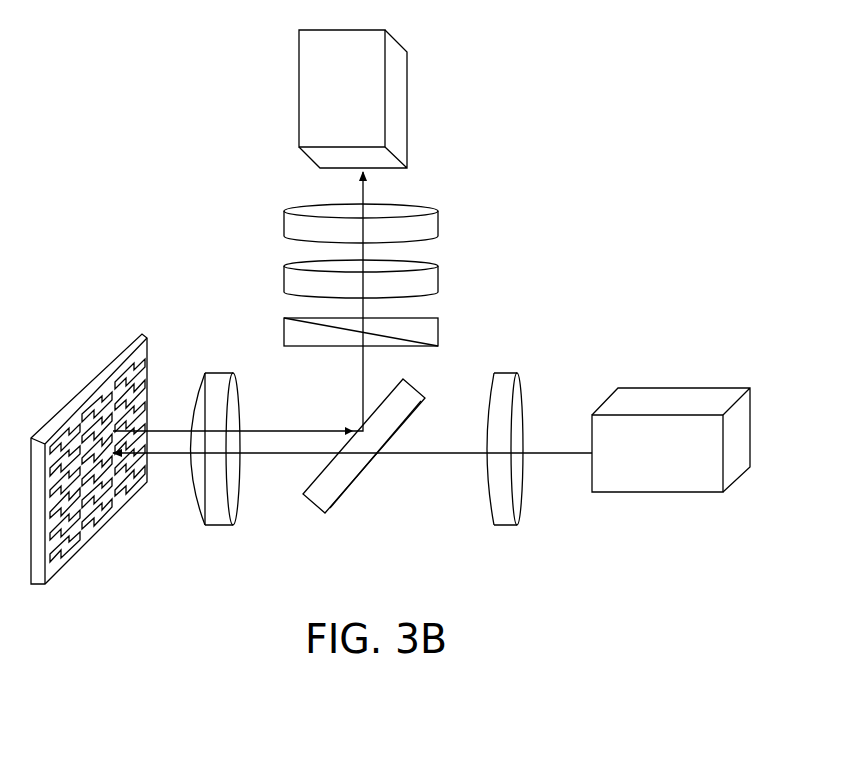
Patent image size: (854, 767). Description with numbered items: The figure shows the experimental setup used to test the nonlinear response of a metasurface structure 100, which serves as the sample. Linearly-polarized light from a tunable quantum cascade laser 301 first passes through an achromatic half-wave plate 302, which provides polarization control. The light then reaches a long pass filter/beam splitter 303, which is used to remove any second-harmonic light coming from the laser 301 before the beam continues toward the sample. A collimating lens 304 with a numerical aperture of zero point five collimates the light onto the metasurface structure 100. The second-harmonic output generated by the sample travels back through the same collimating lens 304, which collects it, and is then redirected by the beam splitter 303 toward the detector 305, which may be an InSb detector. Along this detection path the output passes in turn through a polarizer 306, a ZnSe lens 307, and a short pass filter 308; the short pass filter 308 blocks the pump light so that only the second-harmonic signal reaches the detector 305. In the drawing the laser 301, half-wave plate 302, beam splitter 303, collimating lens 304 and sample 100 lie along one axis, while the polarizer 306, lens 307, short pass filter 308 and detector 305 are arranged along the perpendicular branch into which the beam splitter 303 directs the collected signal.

The metasurface structure 100 is at (75, 393).
The tunable quantum cascade laser 301 is at (656, 492).
The achromatic half-wave plate 302 is at (505, 525).
The long pass filter/beam splitter 303 is at (350, 492).
The collimating lens 304 is at (220, 527).
The detector 305 is at (408, 110).
The polarizer 306 is at (438, 332).
The ZnSe lens 307 is at (438, 280).
The short pass filter 308 is at (438, 229).